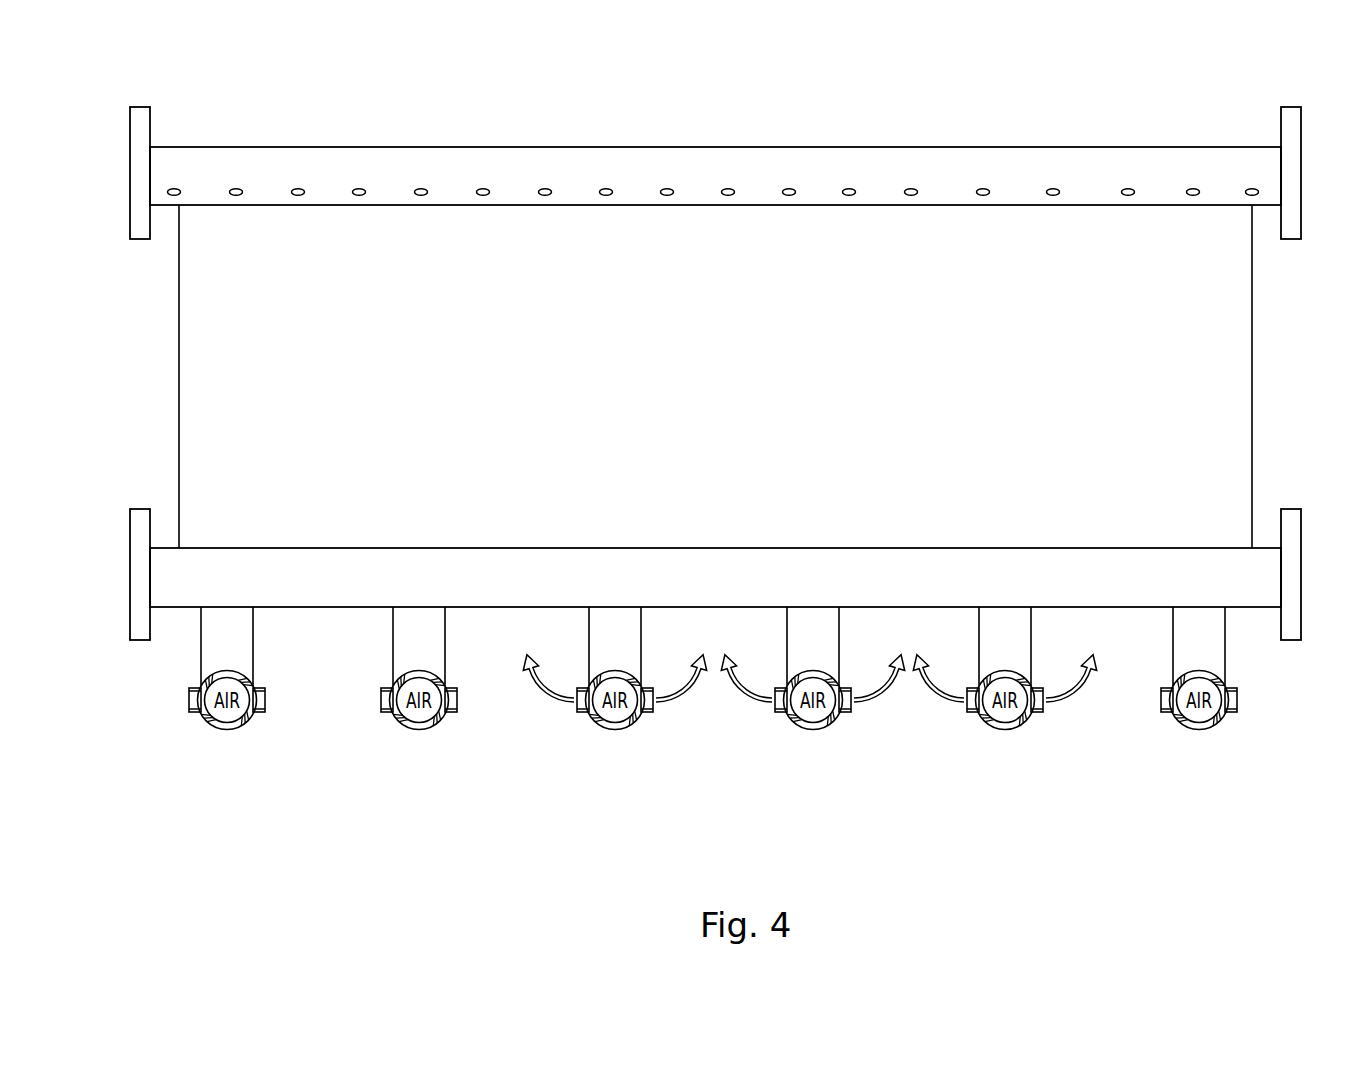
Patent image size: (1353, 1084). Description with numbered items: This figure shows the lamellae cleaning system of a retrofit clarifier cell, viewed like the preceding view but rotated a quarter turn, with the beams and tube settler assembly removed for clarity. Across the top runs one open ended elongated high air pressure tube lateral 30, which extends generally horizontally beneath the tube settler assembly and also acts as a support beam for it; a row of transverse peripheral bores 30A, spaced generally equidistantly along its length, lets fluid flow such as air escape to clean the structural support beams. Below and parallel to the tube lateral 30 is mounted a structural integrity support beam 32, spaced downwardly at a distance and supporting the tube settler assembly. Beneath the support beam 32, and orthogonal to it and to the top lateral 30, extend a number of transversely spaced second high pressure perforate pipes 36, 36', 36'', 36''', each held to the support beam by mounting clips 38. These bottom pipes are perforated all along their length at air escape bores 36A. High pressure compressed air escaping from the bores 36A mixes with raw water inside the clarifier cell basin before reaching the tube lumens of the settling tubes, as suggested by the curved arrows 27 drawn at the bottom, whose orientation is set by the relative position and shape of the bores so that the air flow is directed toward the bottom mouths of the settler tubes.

The high air pressure tube lateral 30 is at (259, 168).
The transverse peripheral bores 30A is at (665, 188).
The structural integrity support beam 32 is at (182, 573).
The high pressure perforate pipe 36 is at (203, 746).
The high pressure perforate pipe 36' is at (386, 742).
The high pressure perforate pipe 36'' is at (587, 724).
The air escape bores 36A is at (972, 710).
The high pressure perforate pipe 36''' is at (1245, 745).
The mounting clip 38 is at (410, 652).
The air flow arrows 27 is at (742, 694).